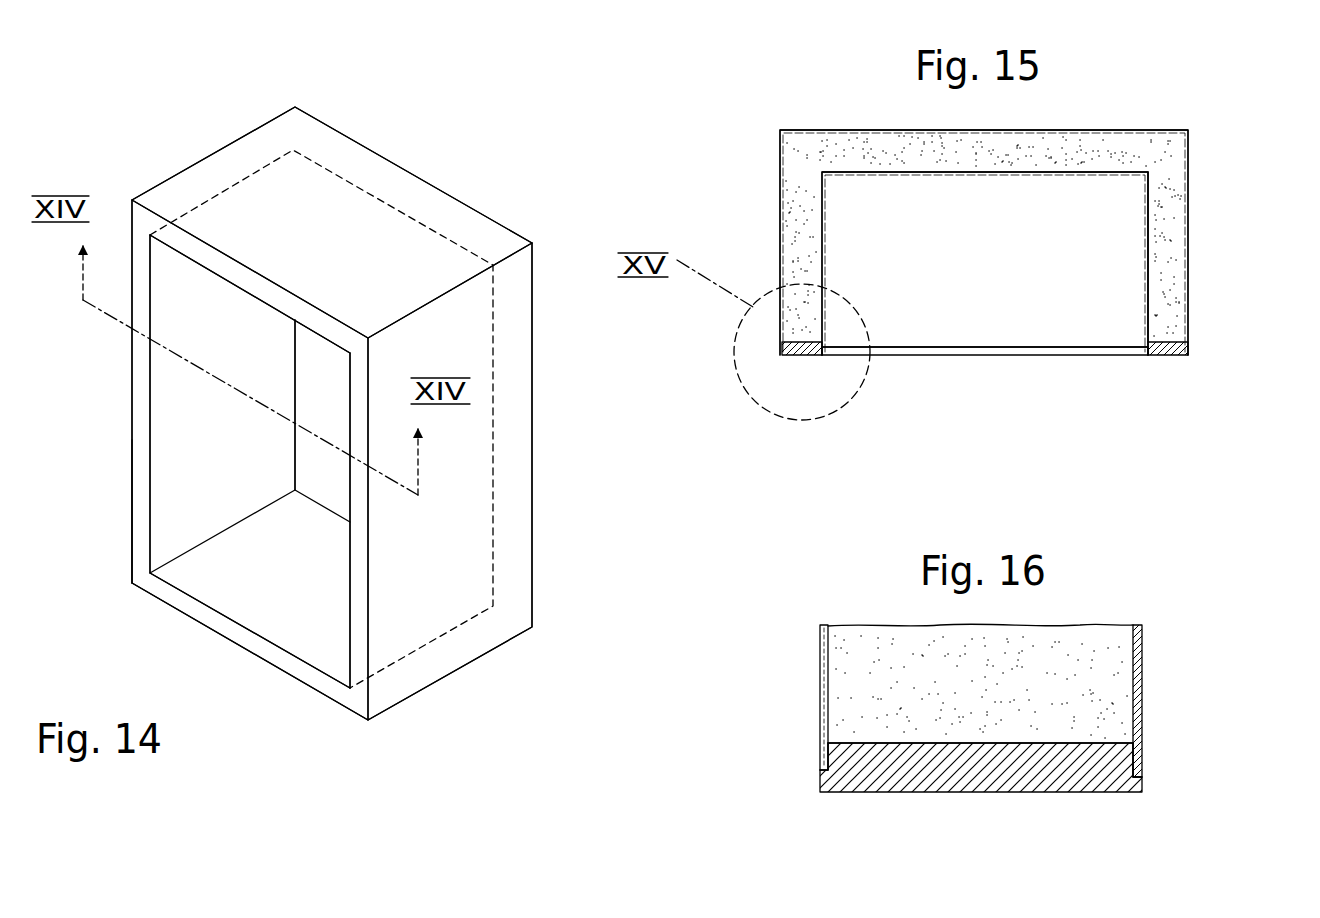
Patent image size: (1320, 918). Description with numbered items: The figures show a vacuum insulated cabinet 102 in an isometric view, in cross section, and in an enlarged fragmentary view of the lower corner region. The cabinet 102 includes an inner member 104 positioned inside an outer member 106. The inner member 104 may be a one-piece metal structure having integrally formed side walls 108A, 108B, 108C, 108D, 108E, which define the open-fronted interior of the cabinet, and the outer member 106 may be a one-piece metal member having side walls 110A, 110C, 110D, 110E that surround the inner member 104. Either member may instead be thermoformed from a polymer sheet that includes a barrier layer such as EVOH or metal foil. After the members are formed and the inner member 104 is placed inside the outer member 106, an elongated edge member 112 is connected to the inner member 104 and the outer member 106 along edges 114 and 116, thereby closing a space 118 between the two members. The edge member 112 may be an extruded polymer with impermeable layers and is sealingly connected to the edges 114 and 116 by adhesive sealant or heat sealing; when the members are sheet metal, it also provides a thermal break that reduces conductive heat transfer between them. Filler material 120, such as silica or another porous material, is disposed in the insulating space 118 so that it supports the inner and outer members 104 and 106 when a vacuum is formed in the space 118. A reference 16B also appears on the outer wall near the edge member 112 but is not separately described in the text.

In FIG. 14, the vacuum insulated cabinet 102 is at (421, 172).
In FIG. 15, the vacuum insulated cabinet 102 is at (1118, 128).
In FIG. 14, the inner member 104 is at (160, 507).
In FIG. 15, the inner member 104 is at (1147, 232).
In FIG. 16, the inner member 104 is at (1145, 692).
In FIG. 14, the outer member 106 is at (132, 437).
In FIG. 15, the outer member 106 is at (1190, 205).
In FIG. 16, the outer member 106 is at (820, 685).
In FIG. 14, the side wall 108A is at (238, 602).
In FIG. 14, the side wall 108B is at (170, 412).
In FIG. 14, the side wall 108C is at (202, 268).
In FIG. 14, the side wall 108D is at (350, 623).
In FIG. 14, the side wall 108E is at (330, 495).
In FIG. 14, the side wall 110A is at (233, 645).
In FIG. 14, the side wall 110C is at (258, 143).
In FIG. 14, the side wall 110D is at (518, 512).
In FIG. 14, the side wall 110E is at (533, 385).
In FIG. 15, the elongated edge member 112 is at (813, 357).
In FIG. 16, the elongated edge member 112 is at (960, 797).
In FIG. 15, the edge 114 is at (782, 347).
In FIG. 16, the edge 114 is at (822, 757).
In FIG. 15, the edge 116 is at (820, 343).
In FIG. 16, the edge 116 is at (1145, 755).
In FIG. 15, the space 118 is at (1185, 300).
In FIG. 16, the space 118 is at (1045, 638).
In FIG. 15, the filler material 120 is at (1183, 260).
In FIG. 16, the filler material 120 is at (1098, 638).
In FIG. 14, the wall edge 16B is at (132, 477).